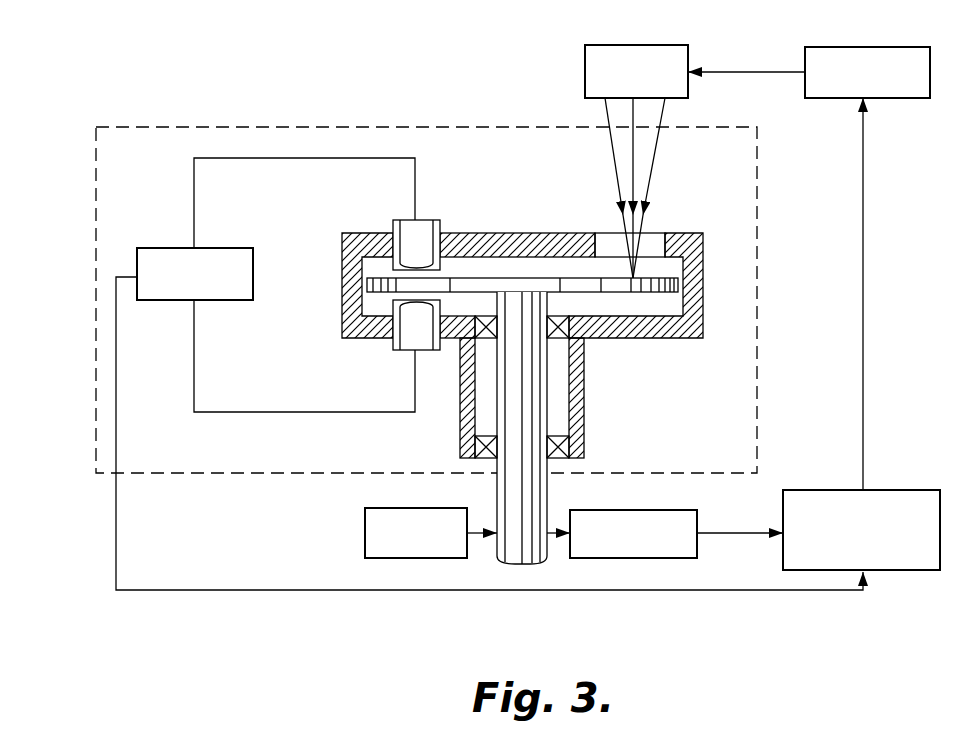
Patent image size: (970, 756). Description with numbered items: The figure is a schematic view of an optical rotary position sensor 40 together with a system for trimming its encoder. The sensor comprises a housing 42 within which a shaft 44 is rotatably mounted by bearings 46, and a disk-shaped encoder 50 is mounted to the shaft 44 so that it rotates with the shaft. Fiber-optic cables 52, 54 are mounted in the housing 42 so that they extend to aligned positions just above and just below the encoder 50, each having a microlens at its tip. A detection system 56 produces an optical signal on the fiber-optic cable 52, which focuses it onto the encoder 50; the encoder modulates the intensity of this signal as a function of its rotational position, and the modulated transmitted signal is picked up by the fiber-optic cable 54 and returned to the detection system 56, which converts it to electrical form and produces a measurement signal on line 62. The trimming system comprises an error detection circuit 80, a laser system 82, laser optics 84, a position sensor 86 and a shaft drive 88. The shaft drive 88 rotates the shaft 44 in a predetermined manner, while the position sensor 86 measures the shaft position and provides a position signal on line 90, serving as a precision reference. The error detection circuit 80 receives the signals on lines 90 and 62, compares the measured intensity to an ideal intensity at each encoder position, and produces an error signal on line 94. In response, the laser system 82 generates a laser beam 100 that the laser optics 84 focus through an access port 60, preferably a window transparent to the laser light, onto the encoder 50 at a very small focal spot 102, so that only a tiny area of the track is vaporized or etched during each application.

The optical rotary position sensor 40 is at (143, 125).
The housing 42 is at (353, 232).
The shaft 44 is at (531, 417).
The bearings 46 is at (558, 337).
The disk-shaped encoder 50 is at (570, 280).
The fiber-optic cable 52 is at (441, 221).
The fiber-optic cable 54 is at (393, 342).
The detection system 56 is at (163, 248).
The access port 60 is at (652, 241).
The line 62 is at (116, 538).
The error detection circuit 80 is at (907, 490).
The laser system 82 is at (890, 46).
The laser optics 84 is at (658, 46).
The position sensor 86 is at (697, 557).
The shaft drive 88 is at (365, 530).
The line 90 is at (732, 533).
The line 94 is at (863, 310).
The laser beam 100 is at (748, 68).
The focal spot 102 is at (635, 278).